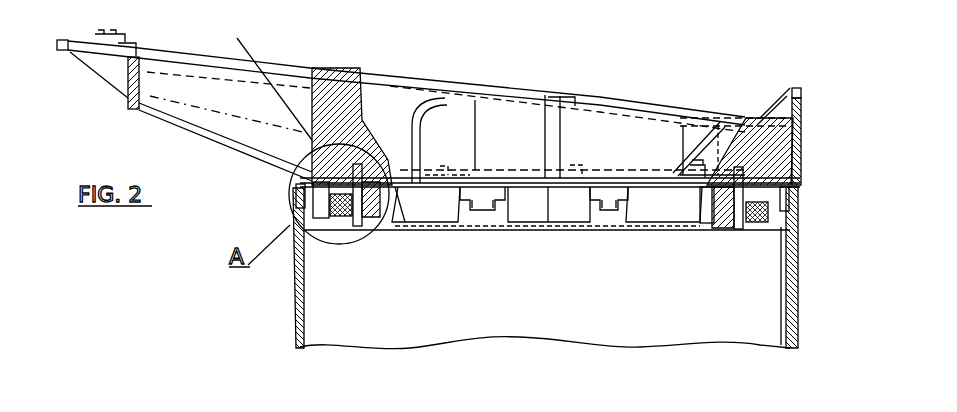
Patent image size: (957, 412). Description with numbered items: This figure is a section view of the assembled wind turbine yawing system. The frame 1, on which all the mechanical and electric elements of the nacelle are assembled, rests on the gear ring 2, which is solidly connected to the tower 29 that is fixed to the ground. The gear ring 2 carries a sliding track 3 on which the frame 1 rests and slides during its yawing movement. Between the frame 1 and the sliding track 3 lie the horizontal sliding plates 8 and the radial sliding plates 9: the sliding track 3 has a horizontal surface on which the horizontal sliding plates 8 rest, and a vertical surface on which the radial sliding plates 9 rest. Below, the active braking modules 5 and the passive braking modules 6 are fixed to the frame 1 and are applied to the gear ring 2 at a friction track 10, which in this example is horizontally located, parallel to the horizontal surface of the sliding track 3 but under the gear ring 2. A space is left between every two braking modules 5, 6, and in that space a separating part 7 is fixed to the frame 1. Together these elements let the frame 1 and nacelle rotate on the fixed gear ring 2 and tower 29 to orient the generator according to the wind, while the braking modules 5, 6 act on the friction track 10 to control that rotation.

The frame 1 is at (330, 83).
The gear ring 2 is at (298, 347).
The sliding track 3 is at (305, 135).
The active braking modules 5 is at (313, 217).
The passive braking modules 6 is at (433, 207).
The separating part 7 is at (505, 200).
The horizontal sliding plates 8 is at (295, 188).
The radial sliding plates 9 is at (362, 205).
The friction track 10 is at (295, 208).
The tower 29 is at (765, 313).